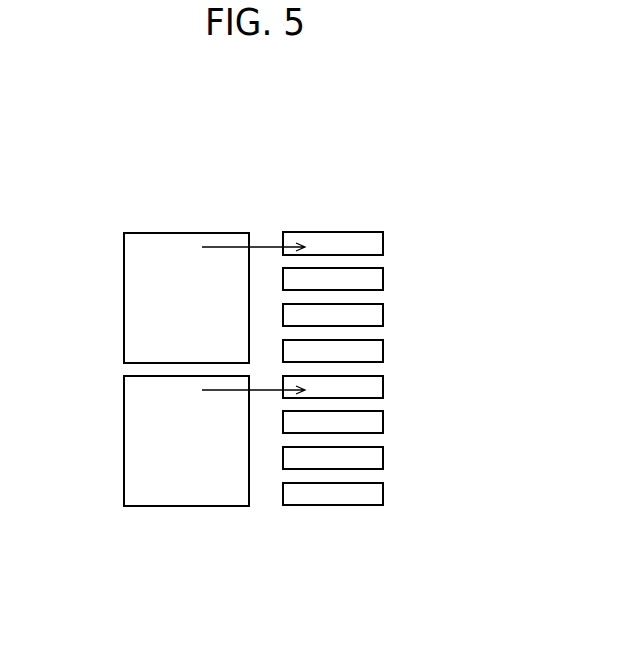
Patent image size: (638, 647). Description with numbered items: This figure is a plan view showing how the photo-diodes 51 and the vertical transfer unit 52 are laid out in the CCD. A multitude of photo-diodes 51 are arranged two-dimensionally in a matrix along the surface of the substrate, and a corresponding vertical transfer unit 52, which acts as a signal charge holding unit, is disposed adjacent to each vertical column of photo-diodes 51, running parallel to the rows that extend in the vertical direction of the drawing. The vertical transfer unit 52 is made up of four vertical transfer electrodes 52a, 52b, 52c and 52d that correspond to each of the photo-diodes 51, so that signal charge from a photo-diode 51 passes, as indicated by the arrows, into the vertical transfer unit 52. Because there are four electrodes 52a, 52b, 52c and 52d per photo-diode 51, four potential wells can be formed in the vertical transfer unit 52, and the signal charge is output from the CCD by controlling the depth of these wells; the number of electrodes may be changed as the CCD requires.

The photo-diodes 51 is at (158, 330).
The vertical transfer unit 52 is at (370, 327).
The vertical transfer electrode 52a is at (368, 242).
The vertical transfer electrode 52b is at (368, 277).
The vertical transfer electrode 52c is at (368, 313).
The vertical transfer electrode 52d is at (368, 349).